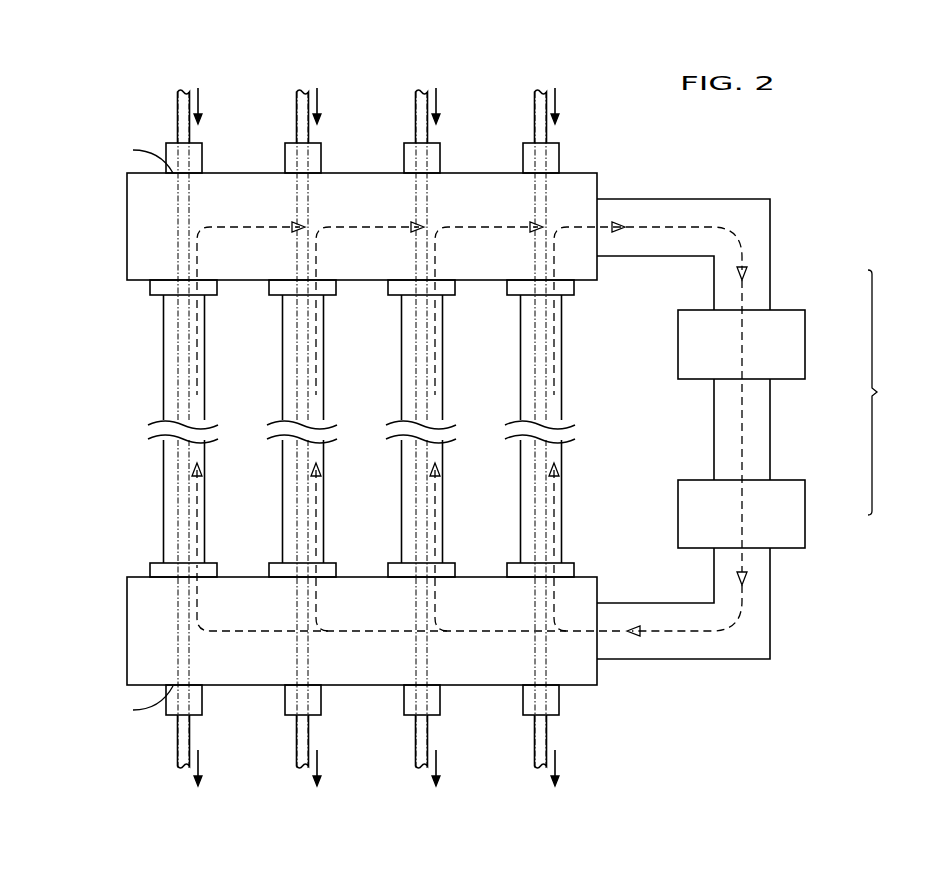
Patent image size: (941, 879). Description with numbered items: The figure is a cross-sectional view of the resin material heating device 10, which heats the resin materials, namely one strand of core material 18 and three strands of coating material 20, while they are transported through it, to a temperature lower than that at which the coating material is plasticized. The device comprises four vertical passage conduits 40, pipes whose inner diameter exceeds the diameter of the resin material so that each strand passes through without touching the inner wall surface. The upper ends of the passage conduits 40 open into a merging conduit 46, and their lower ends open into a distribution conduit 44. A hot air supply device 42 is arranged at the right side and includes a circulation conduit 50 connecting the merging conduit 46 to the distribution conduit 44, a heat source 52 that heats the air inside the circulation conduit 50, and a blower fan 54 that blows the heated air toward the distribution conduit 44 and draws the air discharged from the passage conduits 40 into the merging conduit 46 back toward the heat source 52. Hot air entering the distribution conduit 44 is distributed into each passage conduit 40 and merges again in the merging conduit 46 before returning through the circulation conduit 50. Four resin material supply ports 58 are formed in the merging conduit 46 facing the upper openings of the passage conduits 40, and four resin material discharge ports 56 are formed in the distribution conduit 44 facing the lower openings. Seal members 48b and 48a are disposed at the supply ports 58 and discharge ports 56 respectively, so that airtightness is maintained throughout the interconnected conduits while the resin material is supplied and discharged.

The resin material heating device 10 is at (793, 146).
The core material 18 is at (177, 106).
The coating material 20 is at (296, 106).
The passage conduits 40 is at (163, 345).
The hot air supply device 42 is at (886, 392).
The distribution conduit 44 is at (127, 645).
The merging conduit 46 is at (127, 214).
The seal member 48a is at (203, 702).
The seal member 48b is at (203, 158).
The circulation conduit 50 is at (772, 288).
The heat source 52 is at (805, 507).
The blower fan 54 is at (805, 334).
The resin material discharge ports 56 is at (140, 704).
The resin material supply ports 58 is at (140, 156).